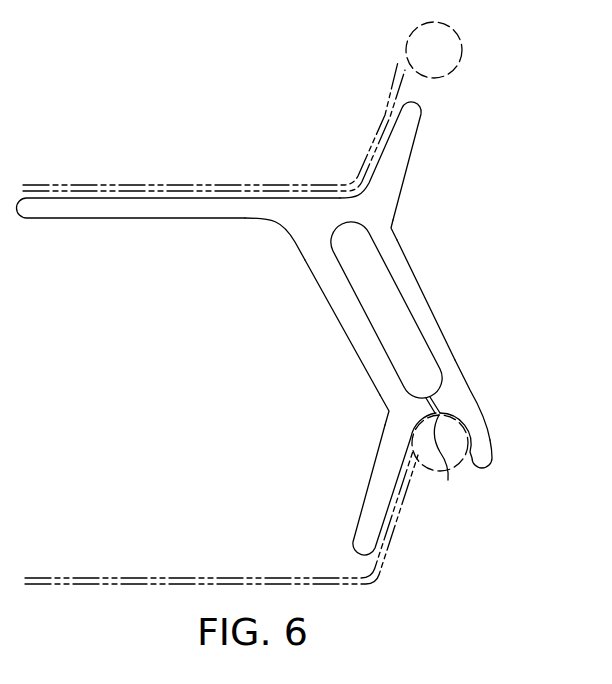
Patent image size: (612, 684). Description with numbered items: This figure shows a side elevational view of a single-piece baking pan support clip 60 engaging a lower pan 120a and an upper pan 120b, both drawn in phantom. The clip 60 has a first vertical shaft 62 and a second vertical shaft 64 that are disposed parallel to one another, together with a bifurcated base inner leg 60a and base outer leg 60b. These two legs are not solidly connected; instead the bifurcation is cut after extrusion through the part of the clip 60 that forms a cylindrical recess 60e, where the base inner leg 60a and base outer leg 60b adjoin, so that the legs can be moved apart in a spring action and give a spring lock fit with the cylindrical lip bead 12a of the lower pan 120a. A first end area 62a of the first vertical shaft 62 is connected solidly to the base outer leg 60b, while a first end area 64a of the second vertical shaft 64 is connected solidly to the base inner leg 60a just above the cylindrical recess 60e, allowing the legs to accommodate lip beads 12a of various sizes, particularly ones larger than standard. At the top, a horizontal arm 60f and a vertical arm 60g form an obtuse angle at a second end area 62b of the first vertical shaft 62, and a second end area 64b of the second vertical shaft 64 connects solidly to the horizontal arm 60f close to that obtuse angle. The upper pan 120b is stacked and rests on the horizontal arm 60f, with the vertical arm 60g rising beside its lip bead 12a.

The clip 60 is at (301, 328).
The base inner leg 60a is at (368, 498).
The base outer leg 60b is at (491, 445).
The cylindrical recess 60e is at (448, 480).
The horizontal arm 60f is at (95, 217).
The vertical arm 60g is at (407, 152).
The first vertical shaft 62 is at (431, 313).
The first end area of first vertical shaft 62a is at (464, 380).
The second end area of first vertical shaft 62b is at (390, 229).
The second vertical shaft 64 is at (332, 308).
The first end area of second vertical shaft 64a is at (390, 410).
The second end area of second vertical shaft 64b is at (292, 240).
The cylindrical lip bead 12a is at (462, 45).
The lower pan 120a is at (221, 517).
The upper pan 120b is at (214, 126).